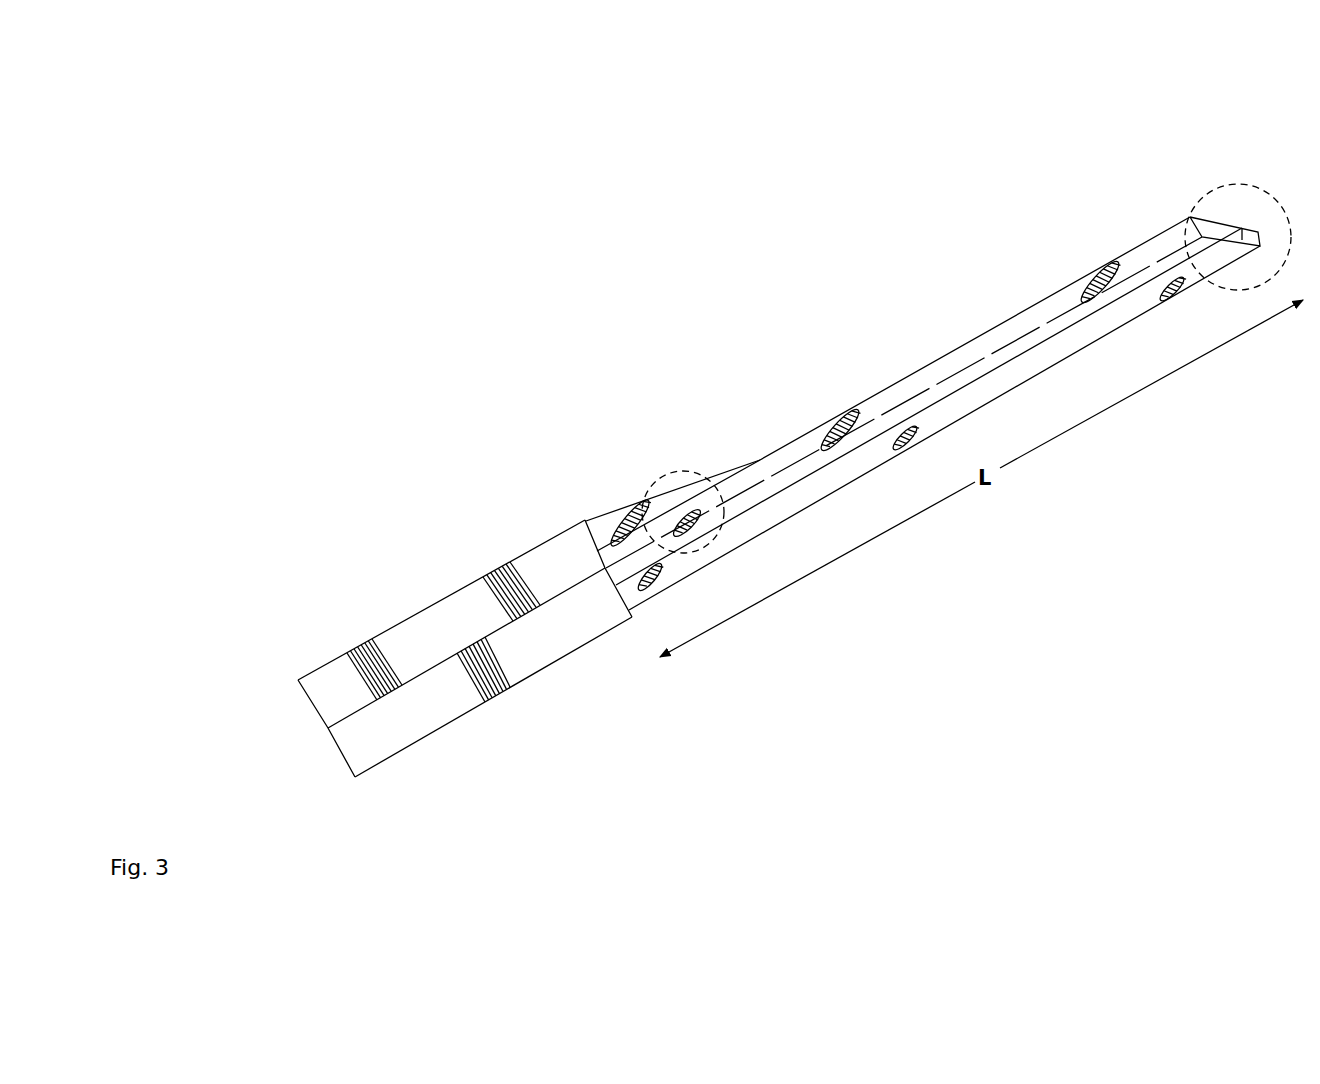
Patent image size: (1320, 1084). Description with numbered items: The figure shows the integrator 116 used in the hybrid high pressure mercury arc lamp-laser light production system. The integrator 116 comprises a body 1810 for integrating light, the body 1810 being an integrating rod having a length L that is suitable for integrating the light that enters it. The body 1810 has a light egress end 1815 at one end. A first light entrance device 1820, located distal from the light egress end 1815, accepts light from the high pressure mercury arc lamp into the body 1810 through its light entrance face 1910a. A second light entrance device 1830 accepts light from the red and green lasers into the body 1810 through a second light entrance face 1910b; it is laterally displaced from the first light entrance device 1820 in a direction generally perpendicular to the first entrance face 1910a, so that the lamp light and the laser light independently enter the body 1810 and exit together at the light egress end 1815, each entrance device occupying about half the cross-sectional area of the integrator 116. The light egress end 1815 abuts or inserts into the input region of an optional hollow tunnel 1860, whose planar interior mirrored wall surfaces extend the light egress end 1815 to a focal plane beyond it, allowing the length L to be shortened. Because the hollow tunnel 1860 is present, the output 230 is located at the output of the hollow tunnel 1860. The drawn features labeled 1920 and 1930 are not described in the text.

The integrator 116 is at (716, 368).
The output 230 is at (288, 709).
The body 1810 is at (693, 563).
The light egress end 1815 is at (584, 516).
The first light entrance device 1820 is at (1207, 196).
The second light entrance device 1830 is at (644, 494).
The hollow tunnel 1860 is at (432, 611).
The light entrance face 1910a is at (1247, 213).
The second light entrance face 1910b is at (697, 490).
The shaft top surface 1920 is at (937, 370).
The slot 1930 is at (612, 530).